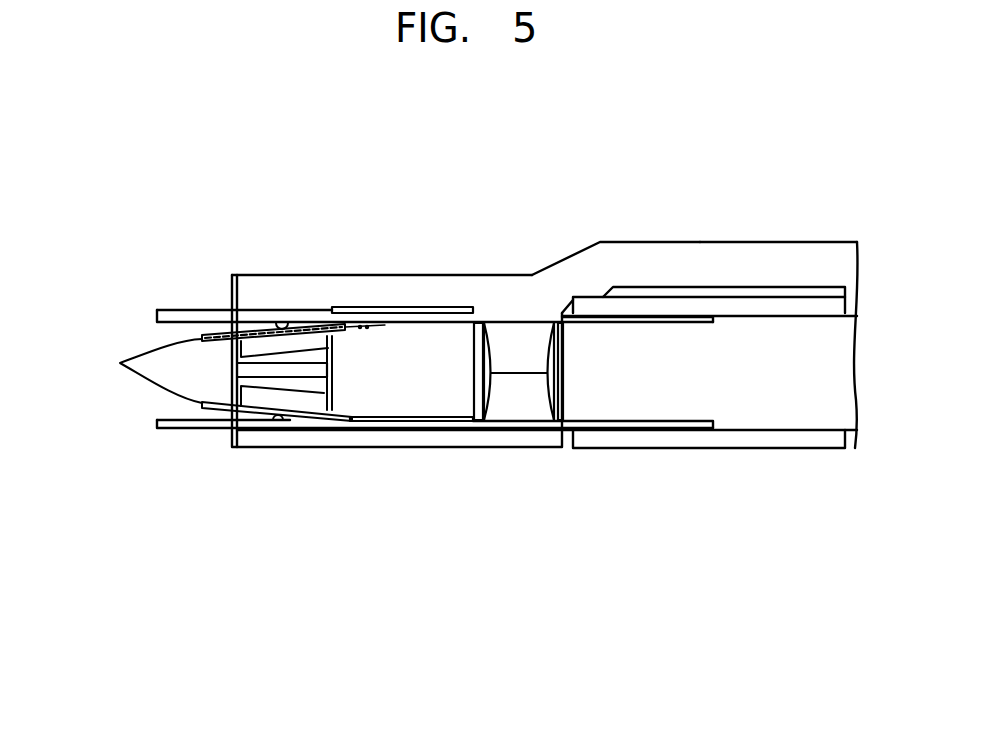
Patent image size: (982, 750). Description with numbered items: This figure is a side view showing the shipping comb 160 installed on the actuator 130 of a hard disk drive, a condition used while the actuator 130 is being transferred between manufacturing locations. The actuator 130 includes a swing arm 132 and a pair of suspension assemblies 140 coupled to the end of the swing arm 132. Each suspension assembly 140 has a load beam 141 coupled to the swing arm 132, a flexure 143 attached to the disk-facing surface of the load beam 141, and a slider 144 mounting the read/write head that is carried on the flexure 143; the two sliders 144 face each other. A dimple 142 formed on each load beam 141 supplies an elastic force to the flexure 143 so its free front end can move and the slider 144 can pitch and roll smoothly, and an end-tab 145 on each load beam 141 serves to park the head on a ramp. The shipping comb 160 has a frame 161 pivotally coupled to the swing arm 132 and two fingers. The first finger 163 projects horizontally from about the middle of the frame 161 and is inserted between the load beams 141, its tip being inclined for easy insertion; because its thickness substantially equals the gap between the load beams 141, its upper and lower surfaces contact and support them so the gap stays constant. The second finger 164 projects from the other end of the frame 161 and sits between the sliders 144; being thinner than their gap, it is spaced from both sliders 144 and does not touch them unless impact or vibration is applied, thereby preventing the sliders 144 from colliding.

The actuator 130 is at (733, 477).
The swing arm 132 is at (807, 305).
The suspension assemblies 140 is at (342, 463).
The load beams 141 is at (415, 307).
The dimple 142 is at (281, 322).
The flexure 143 is at (132, 371).
The sliders 144 is at (333, 347).
The end-tab 145 is at (170, 310).
The shipping comb 160 is at (705, 227).
The frame 161 is at (599, 240).
The first finger 163 is at (513, 410).
The second finger 164 is at (259, 368).